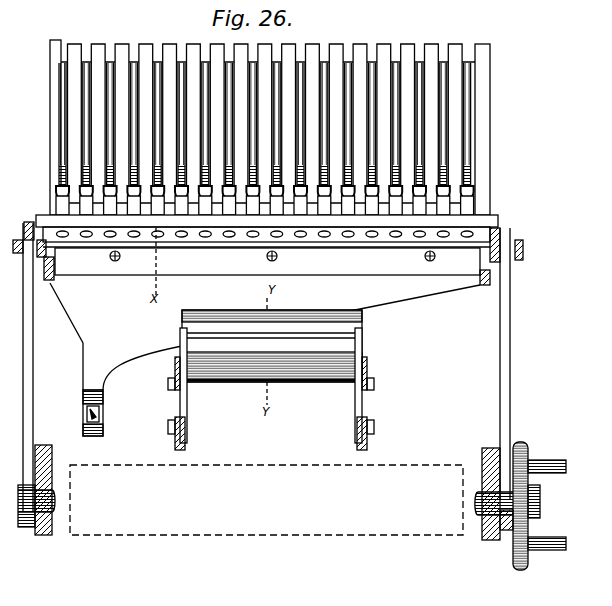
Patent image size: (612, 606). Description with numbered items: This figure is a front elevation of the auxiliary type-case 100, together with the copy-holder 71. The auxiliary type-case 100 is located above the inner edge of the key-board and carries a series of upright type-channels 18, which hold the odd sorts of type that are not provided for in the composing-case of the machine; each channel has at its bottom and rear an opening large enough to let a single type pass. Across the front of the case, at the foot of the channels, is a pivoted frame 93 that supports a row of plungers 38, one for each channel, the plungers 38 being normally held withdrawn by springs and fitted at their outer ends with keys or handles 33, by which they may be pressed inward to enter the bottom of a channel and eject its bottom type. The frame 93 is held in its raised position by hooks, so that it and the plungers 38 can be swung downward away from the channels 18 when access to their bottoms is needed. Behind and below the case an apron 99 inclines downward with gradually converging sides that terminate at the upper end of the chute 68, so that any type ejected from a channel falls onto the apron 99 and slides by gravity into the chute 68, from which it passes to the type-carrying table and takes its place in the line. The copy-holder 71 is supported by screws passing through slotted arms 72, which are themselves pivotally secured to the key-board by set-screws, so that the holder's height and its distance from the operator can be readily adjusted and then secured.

The type-channels 18 is at (176, 114).
The keys or handles 33 is at (180, 190).
The plungers 38 is at (56, 203).
The chute 68 is at (103, 418).
The copy-holder 71 is at (364, 318).
The slotted arms 72 is at (178, 397).
The pivoted frame 93 is at (267, 222).
The apron 99 is at (265, 336).
The auxiliary type-case 100 is at (53, 135).